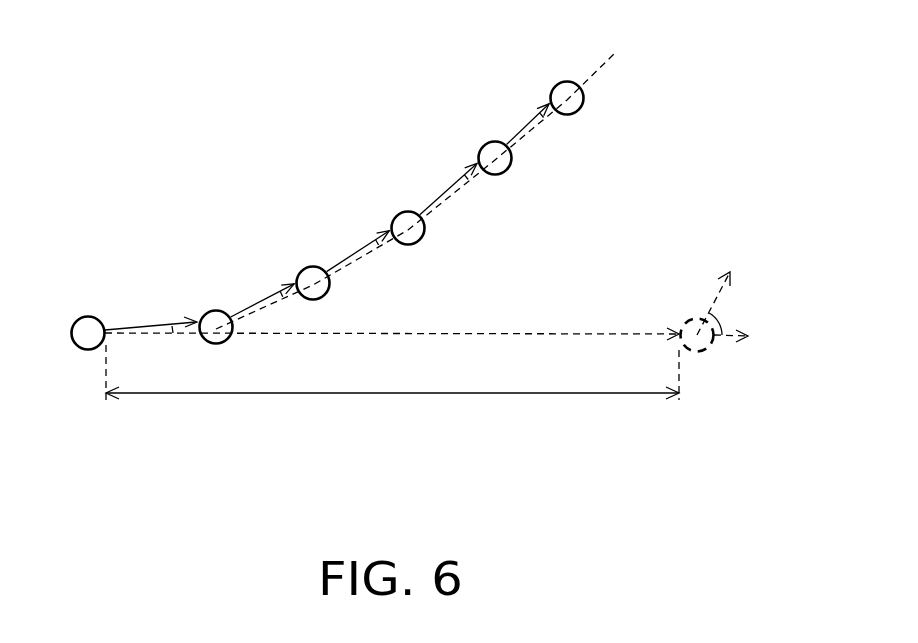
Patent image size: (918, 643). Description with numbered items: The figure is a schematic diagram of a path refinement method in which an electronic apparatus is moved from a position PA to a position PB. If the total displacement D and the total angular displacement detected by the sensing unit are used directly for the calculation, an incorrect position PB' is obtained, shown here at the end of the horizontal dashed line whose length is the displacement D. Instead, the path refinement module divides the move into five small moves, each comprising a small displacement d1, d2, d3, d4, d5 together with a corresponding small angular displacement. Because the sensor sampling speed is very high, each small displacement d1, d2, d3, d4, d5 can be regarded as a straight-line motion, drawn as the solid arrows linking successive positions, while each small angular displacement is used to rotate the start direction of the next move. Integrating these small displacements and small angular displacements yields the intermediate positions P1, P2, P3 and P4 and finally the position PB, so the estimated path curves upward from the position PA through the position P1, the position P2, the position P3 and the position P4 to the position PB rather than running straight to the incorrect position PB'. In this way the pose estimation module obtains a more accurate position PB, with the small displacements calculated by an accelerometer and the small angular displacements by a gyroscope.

The position PA is at (92, 315).
The position P1 is at (215, 310).
The position P2 is at (313, 266).
The position P3 is at (408, 211).
The position P4 is at (496, 141).
The position PB is at (566, 57).
The incorrect position PB' is at (717, 382).
The small displacement d1 is at (151, 309).
The small displacement d2 is at (263, 293).
The small displacement d3 is at (358, 247).
The small displacement d4 is at (448, 185).
The small displacement d5 is at (526, 118).
The displacement D is at (392, 413).